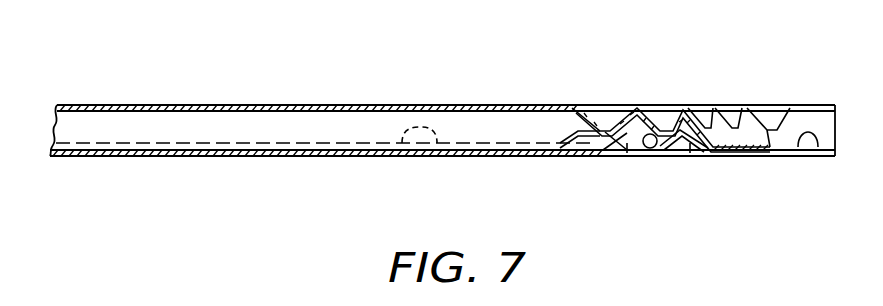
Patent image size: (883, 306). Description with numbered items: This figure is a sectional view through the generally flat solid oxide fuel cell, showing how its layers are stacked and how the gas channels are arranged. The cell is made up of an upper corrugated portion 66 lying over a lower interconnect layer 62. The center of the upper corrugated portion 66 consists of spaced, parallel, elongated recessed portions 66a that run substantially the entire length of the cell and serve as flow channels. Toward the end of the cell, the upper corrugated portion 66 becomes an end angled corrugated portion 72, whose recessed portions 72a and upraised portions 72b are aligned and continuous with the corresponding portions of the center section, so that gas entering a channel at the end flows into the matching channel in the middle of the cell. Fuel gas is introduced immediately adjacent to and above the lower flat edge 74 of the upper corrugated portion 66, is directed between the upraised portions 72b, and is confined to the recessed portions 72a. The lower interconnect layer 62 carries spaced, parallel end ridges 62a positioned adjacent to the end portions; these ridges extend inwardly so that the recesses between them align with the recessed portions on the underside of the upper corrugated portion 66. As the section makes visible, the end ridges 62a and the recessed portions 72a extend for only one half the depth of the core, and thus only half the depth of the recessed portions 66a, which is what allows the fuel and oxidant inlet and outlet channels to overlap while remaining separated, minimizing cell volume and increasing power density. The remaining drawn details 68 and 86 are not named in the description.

The lower interconnect layer 62 is at (149, 157).
The end ridges 62a is at (690, 153).
The upper corrugated portion 66 is at (290, 103).
The recessed portions 66a is at (436, 143).
The tube wall 68 is at (160, 103).
The end angled corrugated portion 72 is at (748, 102).
The recessed portions of the end angled corrugated portion 72a is at (734, 106).
The upraised portions of the end angled corrugated portion 72b is at (682, 108).
The lower flat edge 74 is at (818, 150).
The circular aperture 86 is at (643, 155).